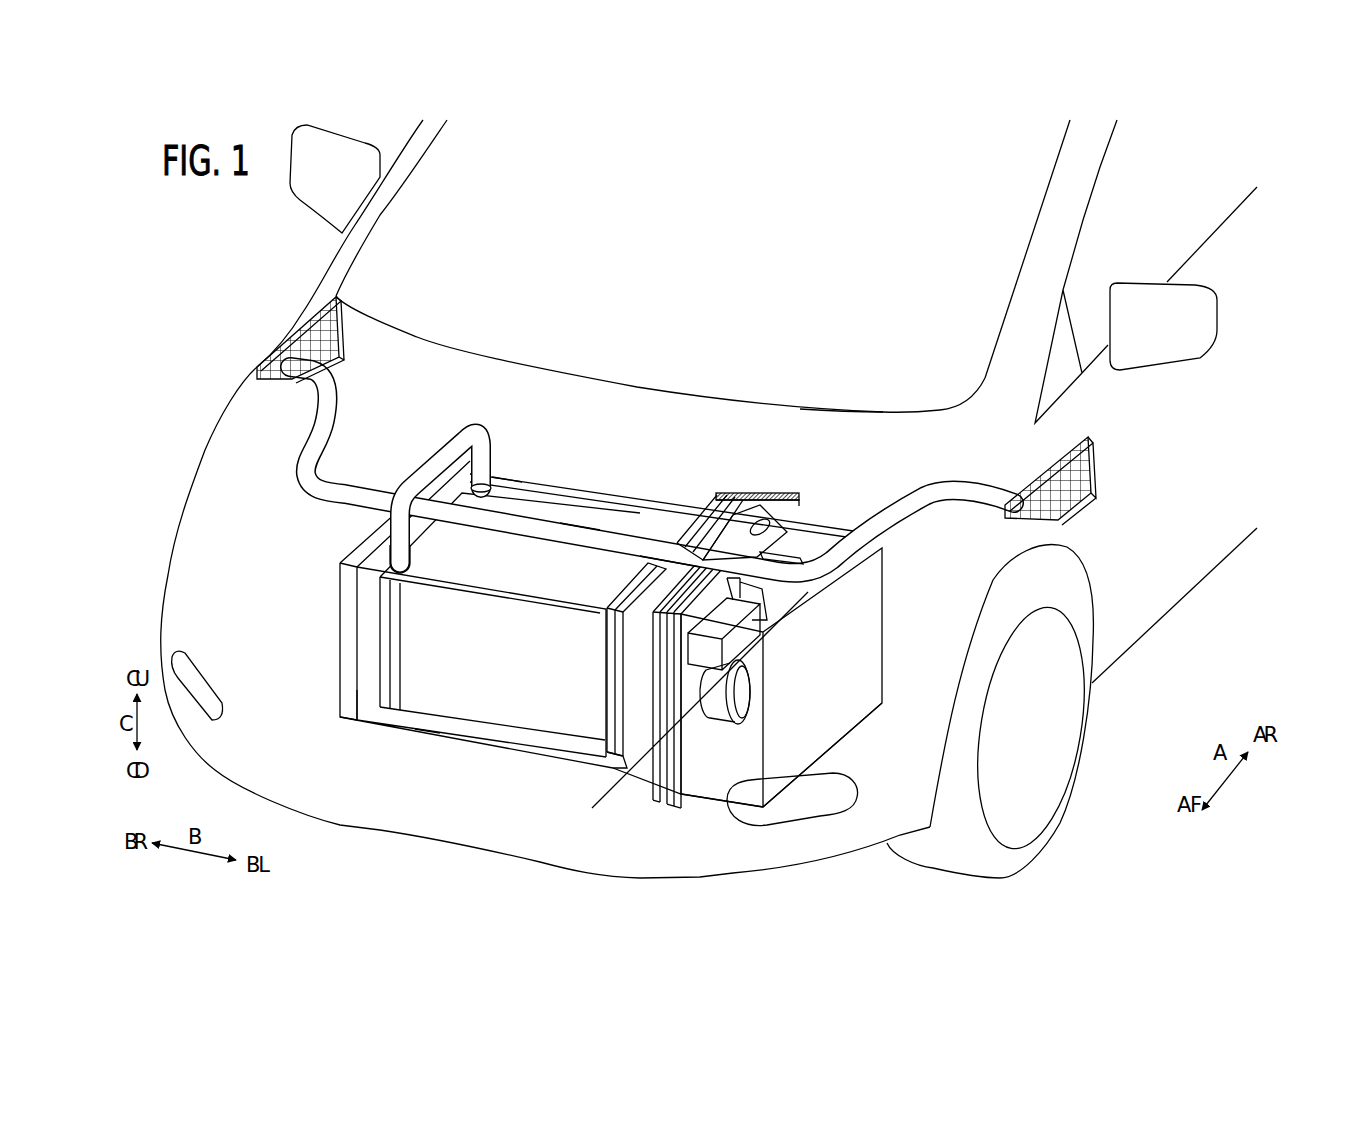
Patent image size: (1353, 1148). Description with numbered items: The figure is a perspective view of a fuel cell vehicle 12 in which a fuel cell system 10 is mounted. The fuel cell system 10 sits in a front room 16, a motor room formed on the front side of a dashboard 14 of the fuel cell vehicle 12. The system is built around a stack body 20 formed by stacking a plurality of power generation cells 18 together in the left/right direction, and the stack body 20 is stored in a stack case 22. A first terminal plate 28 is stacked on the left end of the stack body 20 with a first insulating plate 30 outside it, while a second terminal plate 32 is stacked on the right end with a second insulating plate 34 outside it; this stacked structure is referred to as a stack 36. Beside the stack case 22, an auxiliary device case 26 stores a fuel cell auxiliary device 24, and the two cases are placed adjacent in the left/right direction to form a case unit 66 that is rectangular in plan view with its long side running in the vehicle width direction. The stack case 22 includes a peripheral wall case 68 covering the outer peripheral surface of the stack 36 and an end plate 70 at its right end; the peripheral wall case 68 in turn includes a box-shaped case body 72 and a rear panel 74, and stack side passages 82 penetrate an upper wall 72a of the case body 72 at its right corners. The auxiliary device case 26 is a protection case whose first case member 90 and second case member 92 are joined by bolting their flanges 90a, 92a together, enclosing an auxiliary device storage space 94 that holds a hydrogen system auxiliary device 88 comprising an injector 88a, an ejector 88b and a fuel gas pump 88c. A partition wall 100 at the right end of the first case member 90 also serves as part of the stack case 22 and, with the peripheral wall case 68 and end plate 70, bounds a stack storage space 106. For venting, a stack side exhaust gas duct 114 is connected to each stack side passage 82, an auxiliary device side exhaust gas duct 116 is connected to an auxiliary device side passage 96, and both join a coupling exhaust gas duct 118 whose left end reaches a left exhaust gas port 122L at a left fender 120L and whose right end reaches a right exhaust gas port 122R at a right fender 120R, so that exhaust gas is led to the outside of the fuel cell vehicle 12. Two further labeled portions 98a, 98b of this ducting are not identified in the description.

The fuel cell system 10 is at (483, 388).
The fuel cell vehicle 12 is at (702, 499).
The dashboard 14 is at (637, 398).
The front room 16 is at (835, 497).
The power generation cells 18 is at (575, 615).
The stack body 20 is at (575, 615).
The stack case 22 is at (710, 500).
The fuel cell auxiliary device 24 is at (827, 677).
The auxiliary device case 26 is at (757, 492).
The first terminal plate 28 is at (603, 647).
The first insulating plate 30 is at (620, 677).
The second terminal plate 32 is at (398, 641).
The second insulating plate 34 is at (385, 625).
The stack 36 is at (403, 722).
The case unit 66 is at (738, 483).
The peripheral wall case 68 is at (427, 744).
The end plate 70 is at (344, 704).
The case body 72 is at (484, 738).
The upper wall 72a is at (538, 507).
The rear panel 74 is at (506, 470).
The stack side passages 82 is at (397, 553).
The hydrogen system auxiliary device 88 is at (784, 677).
The injector 88a is at (793, 597).
The ejector 88b is at (748, 645).
The fuel gas pump 88c is at (748, 715).
The first case member 90 is at (690, 706).
The flange 90a is at (650, 797).
The second case member 92 is at (688, 719).
The flange 92a is at (686, 837).
The auxiliary device storage space 94 is at (818, 737).
The auxiliary device side passage 96 is at (764, 510).
The cross pipe first portion 98a is at (652, 479).
The cross pipe second portion 98b is at (688, 540).
The partition wall 100 is at (606, 772).
The stack storage space 106 is at (370, 708).
The stack side exhaust gas duct 114 is at (408, 504).
The auxiliary device side exhaust gas duct 116 is at (750, 546).
The coupling exhaust gas duct 118 is at (580, 542).
The right fender 120R is at (223, 413).
The left fender 120L is at (1095, 522).
The right exhaust gas port 122R is at (318, 318).
The left exhaust gas port 122L is at (1093, 461).